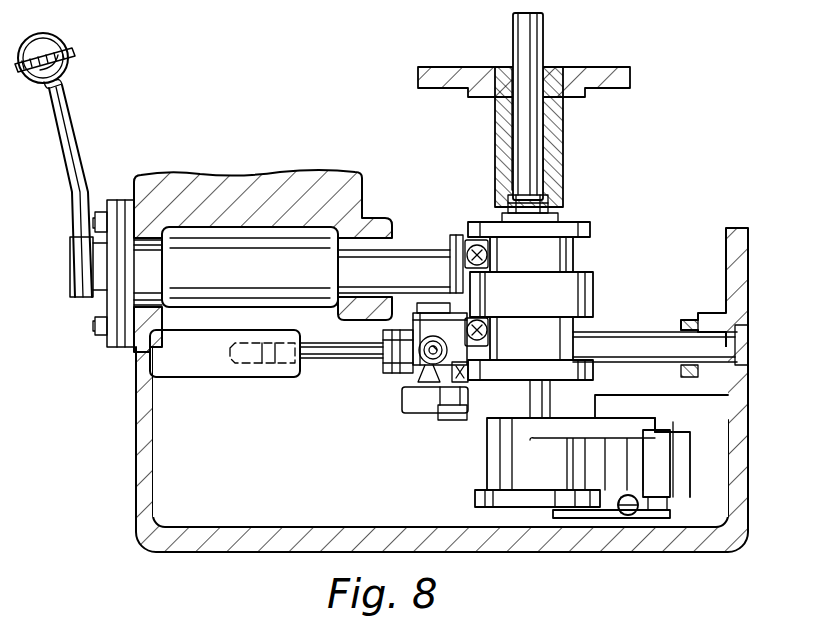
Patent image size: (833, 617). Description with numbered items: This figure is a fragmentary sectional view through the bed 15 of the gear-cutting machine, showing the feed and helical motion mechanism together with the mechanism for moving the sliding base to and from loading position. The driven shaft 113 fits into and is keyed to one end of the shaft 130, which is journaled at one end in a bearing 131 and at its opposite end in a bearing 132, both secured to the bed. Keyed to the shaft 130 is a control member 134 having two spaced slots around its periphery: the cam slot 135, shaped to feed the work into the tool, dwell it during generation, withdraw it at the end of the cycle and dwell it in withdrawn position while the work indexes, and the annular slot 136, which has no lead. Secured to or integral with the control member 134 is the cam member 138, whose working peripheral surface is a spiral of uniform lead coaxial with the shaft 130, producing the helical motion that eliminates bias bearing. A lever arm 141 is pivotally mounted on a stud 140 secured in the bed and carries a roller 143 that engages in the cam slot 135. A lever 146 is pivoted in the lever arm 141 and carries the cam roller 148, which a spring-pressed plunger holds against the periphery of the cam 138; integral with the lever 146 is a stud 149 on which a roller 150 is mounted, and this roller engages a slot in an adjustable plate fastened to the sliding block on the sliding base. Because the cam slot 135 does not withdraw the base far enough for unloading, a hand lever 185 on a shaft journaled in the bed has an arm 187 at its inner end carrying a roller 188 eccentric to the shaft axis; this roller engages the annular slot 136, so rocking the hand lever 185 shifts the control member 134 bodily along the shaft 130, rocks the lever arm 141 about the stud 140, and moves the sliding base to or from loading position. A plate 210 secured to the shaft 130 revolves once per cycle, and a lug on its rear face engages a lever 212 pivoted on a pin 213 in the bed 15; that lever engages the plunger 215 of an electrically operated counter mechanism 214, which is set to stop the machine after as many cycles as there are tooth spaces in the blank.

The bed 15 is at (740, 445).
The shaft 113 is at (543, 48).
The shaft 130 is at (555, 160).
The bearing 131 is at (558, 188).
The bearing 132 is at (500, 465).
The control member 134 is at (595, 294).
The cam slot 135 is at (585, 330).
The annular slot 136 is at (585, 262).
The cam member 138 is at (595, 375).
The stud 140 is at (355, 358).
The lever arm 141 is at (413, 322).
The roller 143 is at (478, 320).
The lever 146 is at (405, 400).
The cam roller 148 is at (465, 373).
The stud 149 is at (440, 340).
The roller 150 is at (405, 373).
The hand lever 185 is at (68, 150).
The arm 187 is at (455, 235).
The roller 188 is at (480, 240).
The plate 210 is at (518, 500).
The lever 212 is at (645, 520).
The pin 213 is at (620, 516).
The counter mechanism 214 is at (665, 480).
The plunger 215 is at (672, 503).